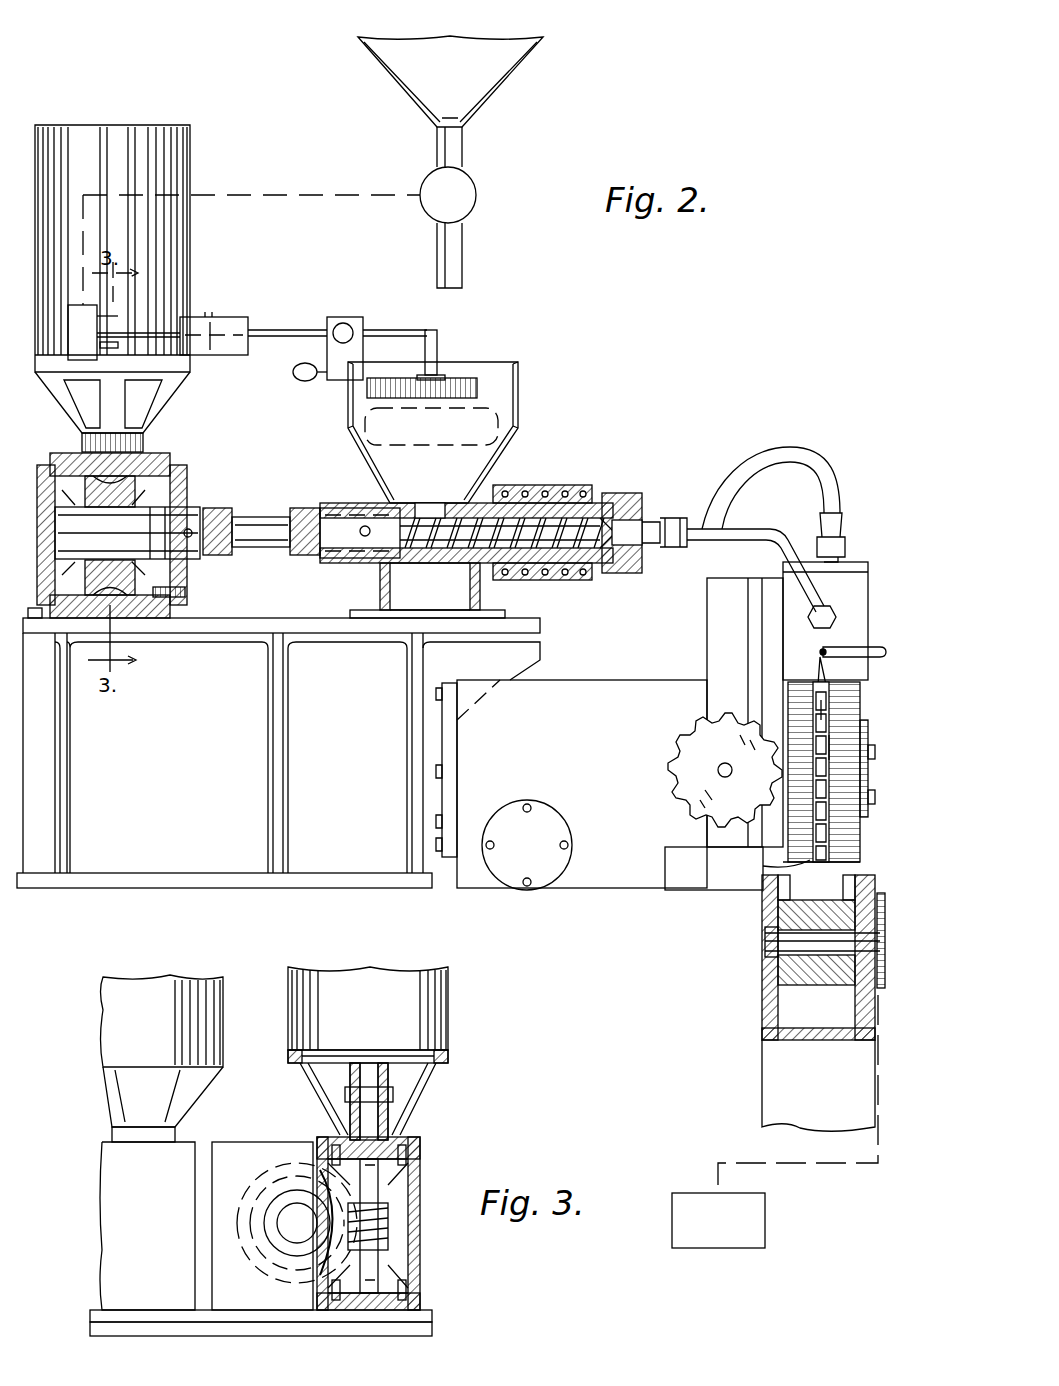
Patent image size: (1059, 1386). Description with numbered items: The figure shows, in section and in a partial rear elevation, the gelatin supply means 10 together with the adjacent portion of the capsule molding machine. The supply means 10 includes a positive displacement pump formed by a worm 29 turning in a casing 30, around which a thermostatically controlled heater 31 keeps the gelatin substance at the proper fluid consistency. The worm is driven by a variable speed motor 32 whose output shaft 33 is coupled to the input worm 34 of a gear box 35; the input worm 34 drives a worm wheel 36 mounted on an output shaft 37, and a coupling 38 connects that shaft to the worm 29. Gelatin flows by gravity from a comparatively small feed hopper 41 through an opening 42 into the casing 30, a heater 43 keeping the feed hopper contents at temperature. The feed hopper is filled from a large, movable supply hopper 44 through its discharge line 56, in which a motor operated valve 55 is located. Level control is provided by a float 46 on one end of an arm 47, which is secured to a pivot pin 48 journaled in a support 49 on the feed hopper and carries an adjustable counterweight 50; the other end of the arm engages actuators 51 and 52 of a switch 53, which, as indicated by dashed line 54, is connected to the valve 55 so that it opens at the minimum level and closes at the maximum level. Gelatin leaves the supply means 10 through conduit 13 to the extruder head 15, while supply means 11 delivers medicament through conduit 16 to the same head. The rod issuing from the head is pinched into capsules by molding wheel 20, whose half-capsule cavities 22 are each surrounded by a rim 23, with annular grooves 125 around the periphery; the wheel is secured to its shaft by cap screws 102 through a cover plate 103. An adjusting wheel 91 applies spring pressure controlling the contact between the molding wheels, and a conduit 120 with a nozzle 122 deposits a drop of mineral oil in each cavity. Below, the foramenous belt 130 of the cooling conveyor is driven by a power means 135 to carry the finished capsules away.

In FIG. 2, the supply means 10 is at (323, 454).
In FIG. 3, the supply means 10 is at (437, 1155).
In FIG. 3, the supply means 11 is at (205, 1116).
In FIG. 2, the conduit 13 is at (740, 535).
In FIG. 2, the extruder head 15 is at (873, 593).
In FIG. 2, the conduit 16 is at (785, 449).
In FIG. 2, the molding wheel 20 is at (865, 852).
In FIG. 2, the half-capsule-cavity 22 is at (825, 720).
In FIG. 2, the rim 23 is at (829, 760).
In FIG. 2, the worm 29 is at (585, 525).
In FIG. 2, the casing 30 is at (400, 563).
In FIG. 2, the heater 31 is at (545, 485).
In FIG. 3, the variable speed motor 32 is at (375, 1014).
In FIG. 3, the output shaft 33 is at (392, 1075).
In FIG. 3, the input worm 34 is at (390, 1240).
In FIG. 2, the gear box 35 is at (165, 453).
In FIG. 3, the gear box 35 is at (422, 1190).
In FIG. 2, the worm wheel 36 is at (90, 480).
In FIG. 3, the worm wheel 36 is at (345, 1225).
In FIG. 2, the output shaft 37 is at (185, 520).
In FIG. 2, the coupling 38 is at (245, 548).
In FIG. 2, the feed hopper 41 is at (518, 370).
In FIG. 2, the opening 42 is at (432, 505).
In FIG. 2, the heater 43 is at (490, 412).
In FIG. 2, the supply hopper 44 is at (530, 55).
In FIG. 2, the float 46 is at (470, 378).
In FIG. 2, the arm 47 is at (430, 330).
In FIG. 2, the pivot pin 48 is at (348, 325).
In FIG. 2, the support 49 is at (328, 317).
In FIG. 2, the counterweight 50 is at (248, 325).
In FIG. 2, the actuator 51 is at (120, 317).
In FIG. 2, the actuator 52 is at (110, 348).
In FIG. 2, the switch 53 is at (82, 332).
In FIG. 2, the dashed line 54 is at (283, 190).
In FIG. 2, the motor operated valve 55 is at (474, 180).
In FIG. 2, the discharge line 56 is at (462, 253).
In FIG. 2, the adjusting wheel 91 is at (680, 800).
In FIG. 2, the cap screws 102 is at (876, 797).
In FIG. 2, the cover plate 103 is at (870, 752).
In FIG. 2, the conduit 120 is at (823, 652).
In FIG. 2, the nozzle 122 is at (820, 668).
In FIG. 2, the grooves 125 is at (780, 866).
In FIG. 2, the foramenous belt 130 is at (780, 990).
In FIG. 2, the power means 135 is at (742, 1248).